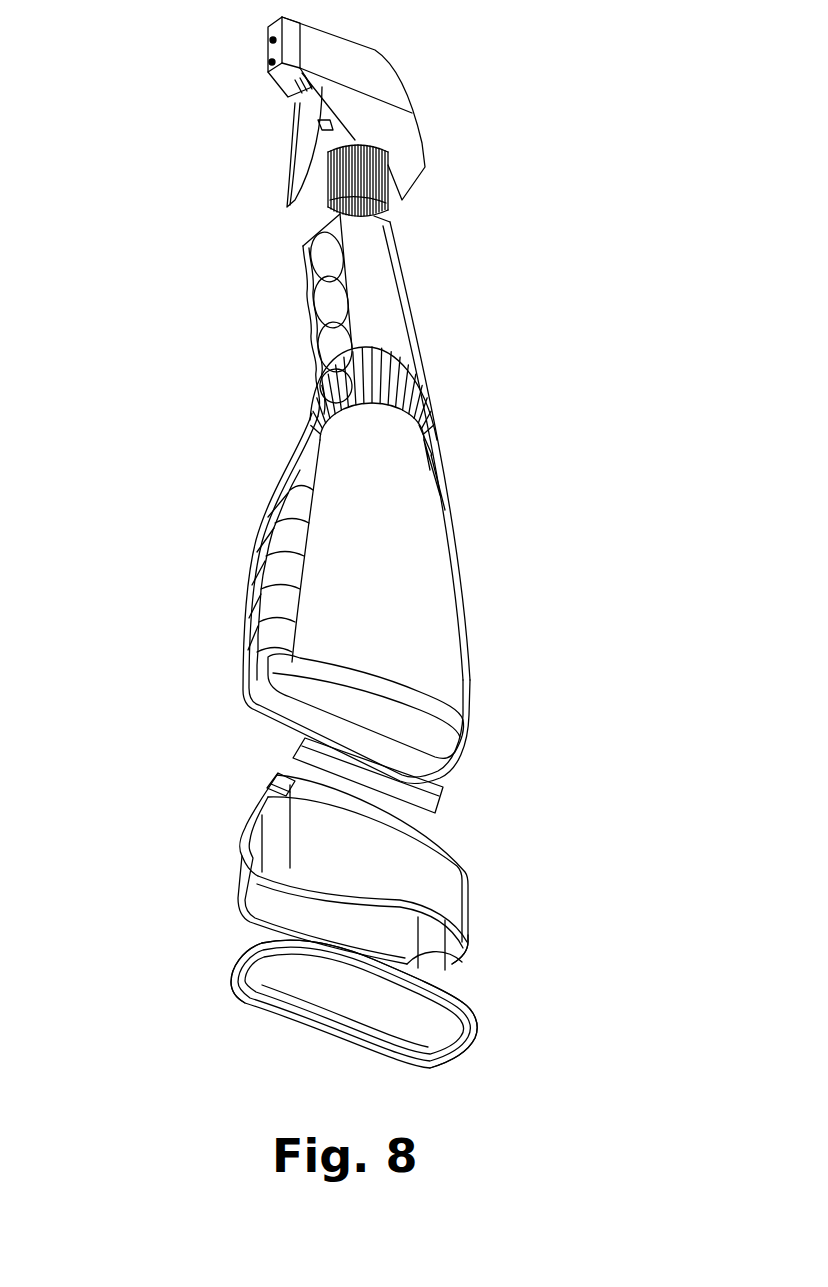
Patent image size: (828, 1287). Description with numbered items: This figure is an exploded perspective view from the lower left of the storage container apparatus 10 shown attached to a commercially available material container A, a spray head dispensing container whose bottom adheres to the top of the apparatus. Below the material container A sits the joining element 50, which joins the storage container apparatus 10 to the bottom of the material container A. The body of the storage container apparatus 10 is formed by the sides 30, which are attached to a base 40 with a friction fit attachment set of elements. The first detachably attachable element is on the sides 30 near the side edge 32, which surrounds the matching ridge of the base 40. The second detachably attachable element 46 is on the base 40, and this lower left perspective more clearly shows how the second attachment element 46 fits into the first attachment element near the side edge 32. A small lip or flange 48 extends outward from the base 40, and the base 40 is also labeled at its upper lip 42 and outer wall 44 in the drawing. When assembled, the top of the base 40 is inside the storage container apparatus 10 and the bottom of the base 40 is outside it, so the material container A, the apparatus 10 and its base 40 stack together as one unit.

The material container A is at (510, 515).
The storage container apparatus 10 is at (570, 850).
The sides 30 is at (250, 850).
The side edge 32 is at (240, 890).
The base 40 is at (210, 977).
The upper lip of lower ring 42 is at (308, 927).
The outer wall of lower ring 44 is at (475, 1030).
The second detachably attachable element 46 is at (477, 967).
The lip or flange 48 is at (229, 985).
The joining element 50 is at (265, 789).